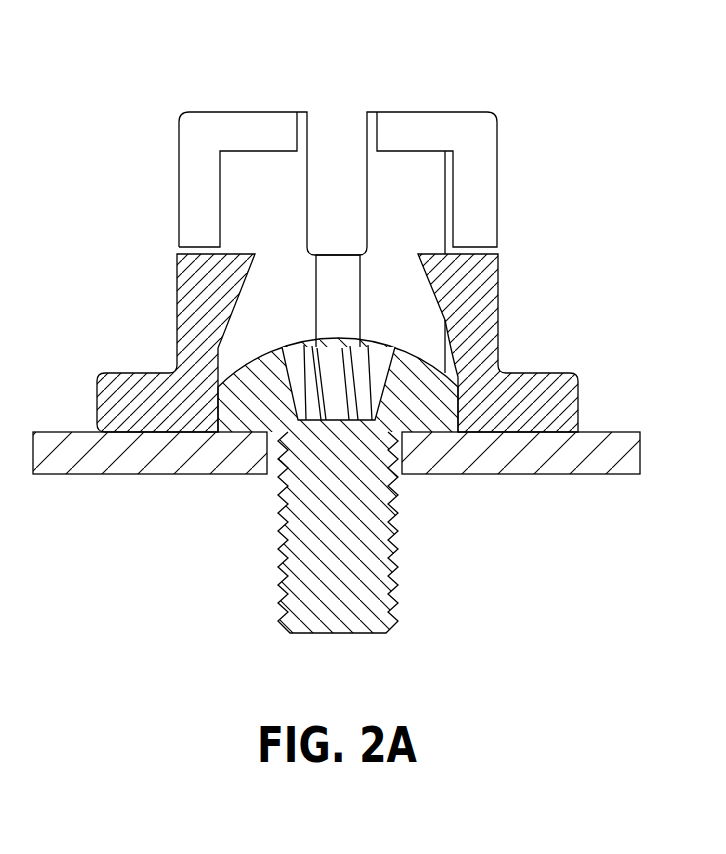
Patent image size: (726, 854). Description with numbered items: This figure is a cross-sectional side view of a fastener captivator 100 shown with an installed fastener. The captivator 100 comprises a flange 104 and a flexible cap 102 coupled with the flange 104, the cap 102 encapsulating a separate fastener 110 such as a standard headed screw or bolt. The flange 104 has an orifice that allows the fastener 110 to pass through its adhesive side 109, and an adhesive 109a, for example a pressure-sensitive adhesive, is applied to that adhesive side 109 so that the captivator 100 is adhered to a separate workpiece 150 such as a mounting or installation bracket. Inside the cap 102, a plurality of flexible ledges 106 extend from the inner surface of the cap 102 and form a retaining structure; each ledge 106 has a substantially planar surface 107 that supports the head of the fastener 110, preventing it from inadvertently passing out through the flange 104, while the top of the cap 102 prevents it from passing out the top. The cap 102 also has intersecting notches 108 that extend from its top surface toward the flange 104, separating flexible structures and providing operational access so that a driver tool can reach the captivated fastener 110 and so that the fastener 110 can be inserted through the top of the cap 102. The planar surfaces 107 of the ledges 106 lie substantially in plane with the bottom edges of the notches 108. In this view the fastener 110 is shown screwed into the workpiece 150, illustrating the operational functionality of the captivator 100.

The fastener captivator 100 is at (170, 150).
The flexible cap 102 is at (487, 130).
The flange 104 is at (565, 393).
The flexible ledges 106 is at (207, 273).
The planar surface 107 is at (235, 254).
The intersecting notches 108 is at (338, 110).
The adhesive side 109 is at (137, 445).
The adhesive 109a is at (170, 433).
The fastener 110 is at (372, 597).
The workpiece 150 is at (610, 442).